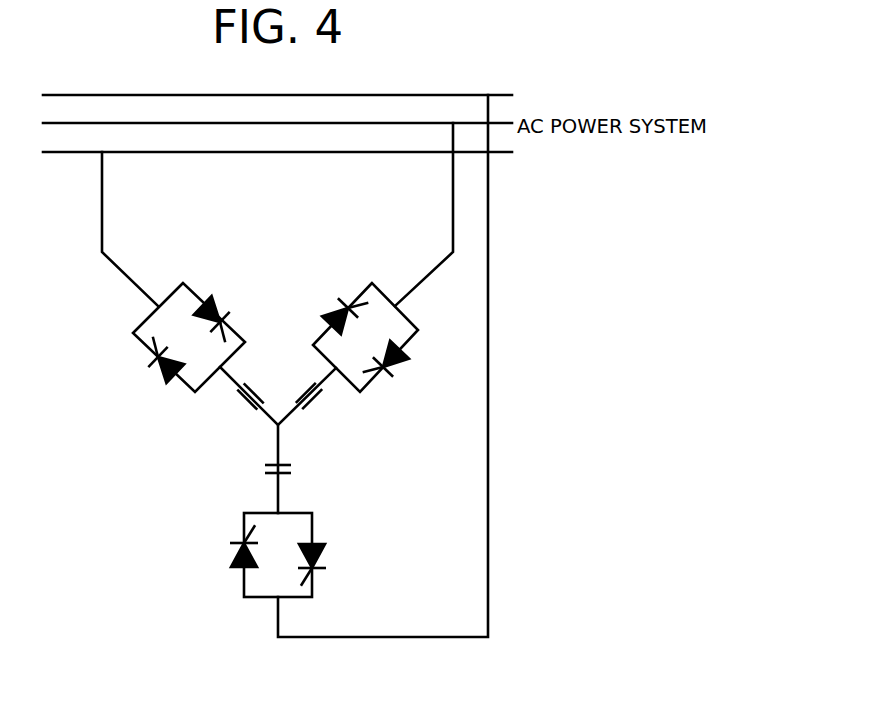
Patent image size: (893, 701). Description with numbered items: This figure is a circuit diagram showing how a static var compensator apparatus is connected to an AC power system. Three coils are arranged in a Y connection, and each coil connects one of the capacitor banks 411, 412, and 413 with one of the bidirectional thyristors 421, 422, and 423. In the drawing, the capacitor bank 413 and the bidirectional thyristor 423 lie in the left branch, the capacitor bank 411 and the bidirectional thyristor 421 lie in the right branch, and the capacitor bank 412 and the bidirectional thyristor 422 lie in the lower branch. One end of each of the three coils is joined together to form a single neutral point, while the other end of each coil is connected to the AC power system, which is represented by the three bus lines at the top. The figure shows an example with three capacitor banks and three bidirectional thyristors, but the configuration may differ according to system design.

The capacitor bank 411 is at (320, 410).
The capacitor bank 412 is at (297, 470).
The capacitor bank 413 is at (242, 402).
The bidirectional thyristor 421 is at (410, 317).
The bidirectional thyristor 422 is at (320, 575).
The bidirectional thyristor 423 is at (193, 293).